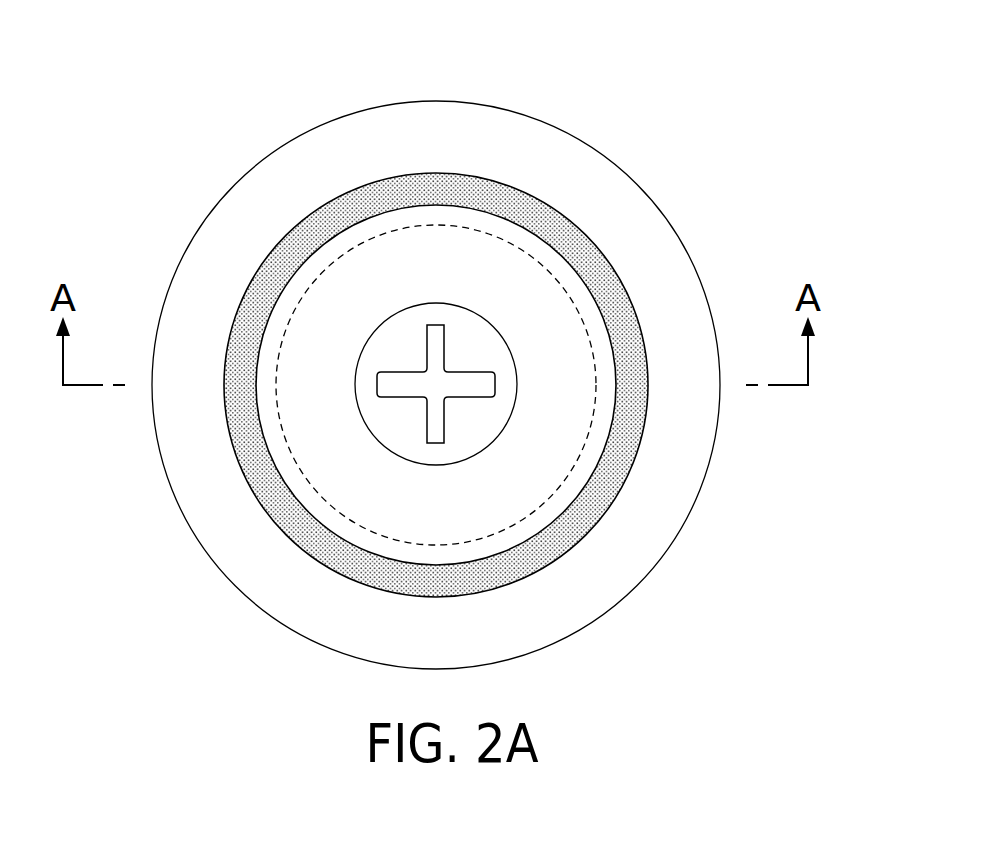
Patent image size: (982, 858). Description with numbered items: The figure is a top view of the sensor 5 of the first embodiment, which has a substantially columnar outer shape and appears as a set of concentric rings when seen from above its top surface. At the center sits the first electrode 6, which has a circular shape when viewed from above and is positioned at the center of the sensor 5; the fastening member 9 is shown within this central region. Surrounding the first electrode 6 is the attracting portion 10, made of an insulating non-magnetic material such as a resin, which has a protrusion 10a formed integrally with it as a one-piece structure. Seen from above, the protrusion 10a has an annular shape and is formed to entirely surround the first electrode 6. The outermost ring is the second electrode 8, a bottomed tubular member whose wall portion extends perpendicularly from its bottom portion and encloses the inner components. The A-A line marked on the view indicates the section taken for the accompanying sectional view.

The sensor 5 is at (451, 353).
The first electrode 6 is at (440, 257).
The second electrode 8 is at (657, 262).
The fastening member 9 is at (395, 340).
The attracting portion 10 is at (583, 222).
The protrusion 10a is at (645, 385).